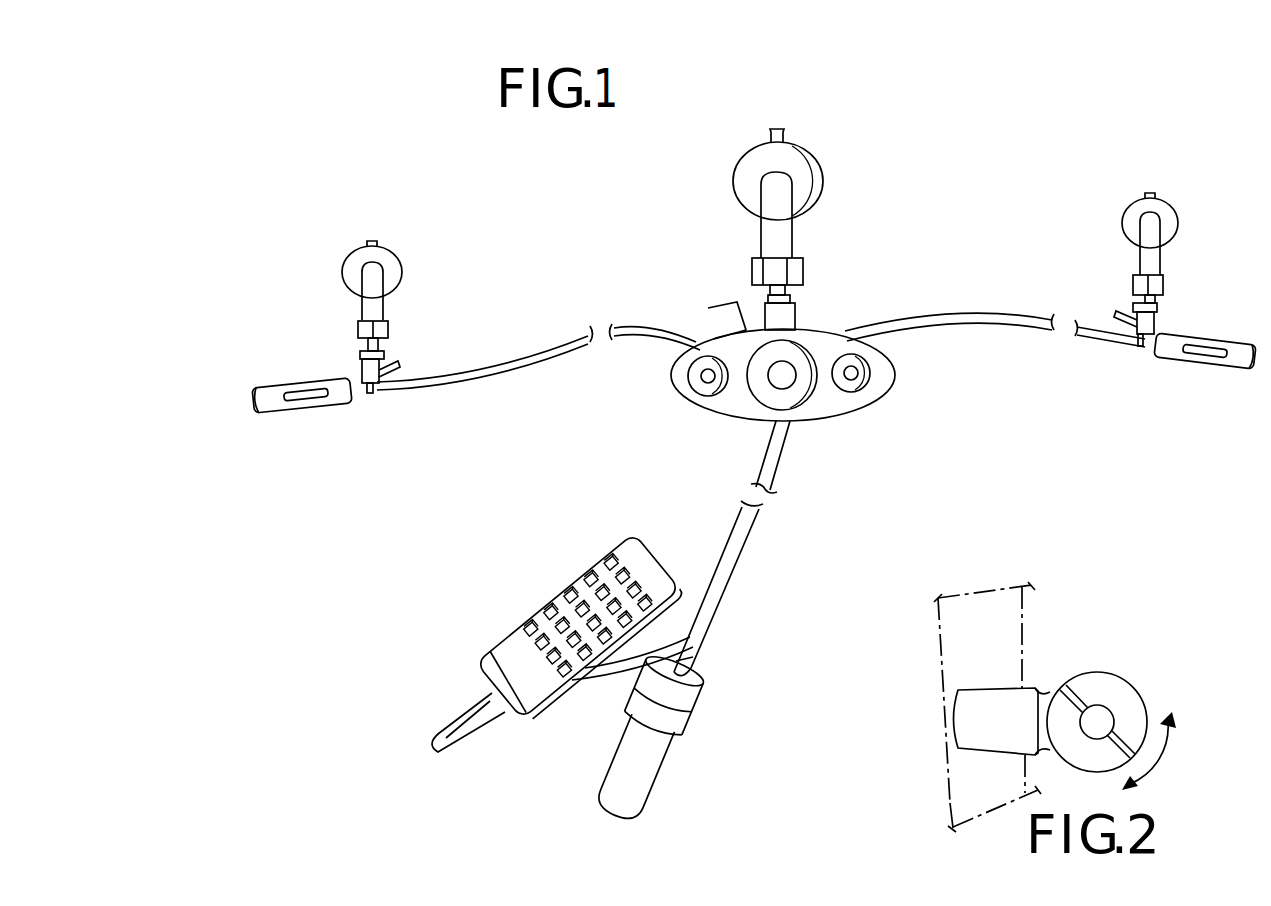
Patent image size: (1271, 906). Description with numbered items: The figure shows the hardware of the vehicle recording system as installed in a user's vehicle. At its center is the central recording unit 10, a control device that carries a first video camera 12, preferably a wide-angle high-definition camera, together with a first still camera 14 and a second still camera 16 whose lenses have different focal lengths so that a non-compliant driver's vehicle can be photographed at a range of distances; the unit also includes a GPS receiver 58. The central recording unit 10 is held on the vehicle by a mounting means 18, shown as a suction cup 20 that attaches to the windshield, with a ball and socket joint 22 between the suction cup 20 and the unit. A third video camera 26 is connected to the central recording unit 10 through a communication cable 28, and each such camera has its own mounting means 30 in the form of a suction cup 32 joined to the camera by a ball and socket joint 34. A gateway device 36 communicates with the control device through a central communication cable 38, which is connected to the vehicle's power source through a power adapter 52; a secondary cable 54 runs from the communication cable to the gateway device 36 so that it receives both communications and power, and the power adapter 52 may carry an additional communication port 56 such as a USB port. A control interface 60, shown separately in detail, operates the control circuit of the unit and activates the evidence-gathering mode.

In FIG. 1, the central recording unit 10 is at (783, 404).
In FIG. 1, the first video camera 12 is at (886, 389).
In FIG. 1, the first still camera 14 is at (663, 385).
In FIG. 1, the second still camera 16 is at (730, 399).
In FIG. 1, the mounting means 18 is at (811, 174).
In FIG. 1, the suction cup 20 is at (823, 181).
In FIG. 1, the ball and socket joint 22 is at (820, 294).
In FIG. 1, the third video camera 26 is at (1212, 379).
In FIG. 1, the communication cable 28 is at (761, 322).
In FIG. 1, the mounting means 30 is at (813, 266).
In FIG. 1, the suction cup 32 is at (789, 236).
In FIG. 1, the ball and socket joint 34 is at (747, 343).
In FIG. 1, the gateway device 36 is at (584, 607).
In FIG. 1, the central communication cable 38 is at (746, 546).
In FIG. 1, the power adapter 52 is at (646, 751).
In FIG. 1, the secondary cable 54 is at (468, 754).
In FIG. 1, the communication port 56 is at (725, 673).
In FIG. 1, the GPS receiver 58 is at (717, 300).
In FIG. 2, the control interface 60 is at (1055, 707).